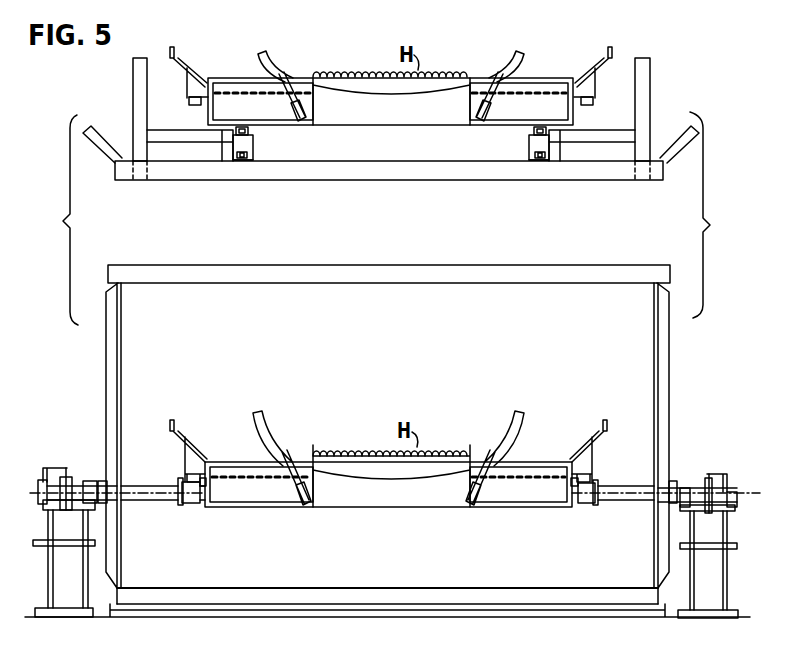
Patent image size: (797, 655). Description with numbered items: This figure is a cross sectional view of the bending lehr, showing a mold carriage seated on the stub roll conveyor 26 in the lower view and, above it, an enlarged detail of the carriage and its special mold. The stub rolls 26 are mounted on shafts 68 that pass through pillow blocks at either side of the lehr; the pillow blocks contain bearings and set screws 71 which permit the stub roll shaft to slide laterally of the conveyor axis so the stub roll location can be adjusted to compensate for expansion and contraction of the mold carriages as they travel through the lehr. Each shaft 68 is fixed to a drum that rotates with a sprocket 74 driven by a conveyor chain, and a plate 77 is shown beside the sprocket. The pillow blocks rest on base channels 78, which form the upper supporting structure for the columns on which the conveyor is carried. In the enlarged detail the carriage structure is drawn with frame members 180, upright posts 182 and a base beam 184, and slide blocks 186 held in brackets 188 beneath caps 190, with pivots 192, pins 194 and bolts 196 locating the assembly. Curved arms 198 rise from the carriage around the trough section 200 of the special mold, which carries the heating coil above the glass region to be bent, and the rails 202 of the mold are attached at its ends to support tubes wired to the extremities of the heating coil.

The stub roll conveyor 26 is at (190, 501).
The shaft 68 is at (56, 468).
The set screws 71 is at (38, 490).
The sprocket 74 is at (71, 478).
The plate 77 is at (67, 468).
The base channels 78 is at (84, 506).
The frame member 180 is at (95, 148).
The upright post 182 is at (133, 105).
The base beam 184 is at (396, 181).
The slide block 186 is at (256, 154).
The bracket 188 is at (226, 150).
The cap 190 is at (250, 132).
The pivot 192 is at (251, 161).
The pin 194 is at (236, 128).
The bolt 196 is at (241, 161).
The curved arm 198 is at (240, 127).
The trough section 200 is at (388, 126).
The rails 202 is at (189, 101).